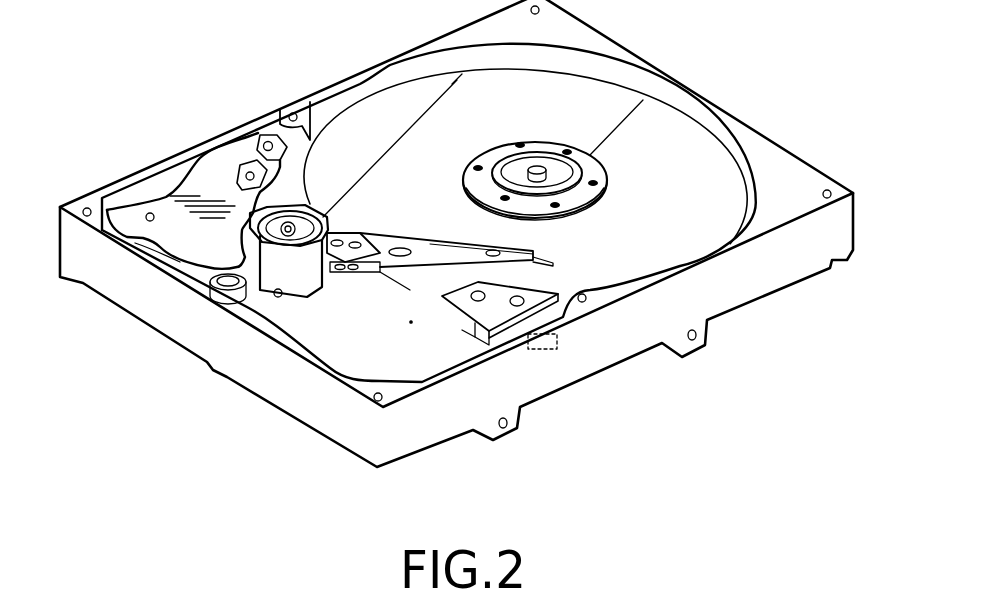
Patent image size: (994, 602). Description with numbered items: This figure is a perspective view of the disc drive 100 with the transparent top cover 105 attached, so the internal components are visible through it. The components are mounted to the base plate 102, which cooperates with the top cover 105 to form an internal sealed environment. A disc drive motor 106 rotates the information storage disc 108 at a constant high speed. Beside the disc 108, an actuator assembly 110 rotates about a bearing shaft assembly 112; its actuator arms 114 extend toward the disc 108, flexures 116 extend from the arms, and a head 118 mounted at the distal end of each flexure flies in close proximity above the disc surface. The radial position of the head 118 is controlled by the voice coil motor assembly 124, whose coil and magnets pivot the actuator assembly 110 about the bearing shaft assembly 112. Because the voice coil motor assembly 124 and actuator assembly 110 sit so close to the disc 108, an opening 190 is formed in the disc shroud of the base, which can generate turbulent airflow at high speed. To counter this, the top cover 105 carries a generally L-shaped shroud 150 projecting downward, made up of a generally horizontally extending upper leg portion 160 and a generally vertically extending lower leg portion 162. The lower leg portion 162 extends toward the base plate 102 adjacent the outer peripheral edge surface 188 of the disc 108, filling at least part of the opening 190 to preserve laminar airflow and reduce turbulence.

The disc drive 100 is at (140, 382).
The base plate 102 is at (808, 152).
The top cover 105 is at (766, 145).
The disc drive motor 106 is at (607, 181).
The information storage disc 108 is at (667, 122).
The actuator assembly 110 is at (411, 232).
The bearing shaft assembly 112 is at (325, 216).
The actuator arm 114 is at (289, 271).
The flexure 116 is at (434, 243).
The head 118 is at (548, 263).
The voice coil motor assembly 124 is at (197, 167).
The shroud 150 is at (532, 334).
The upper leg portion 160 is at (538, 296).
The lower leg portion 162 is at (478, 340).
The outer peripheral edge surface 188 is at (405, 291).
The opening 190 is at (410, 309).